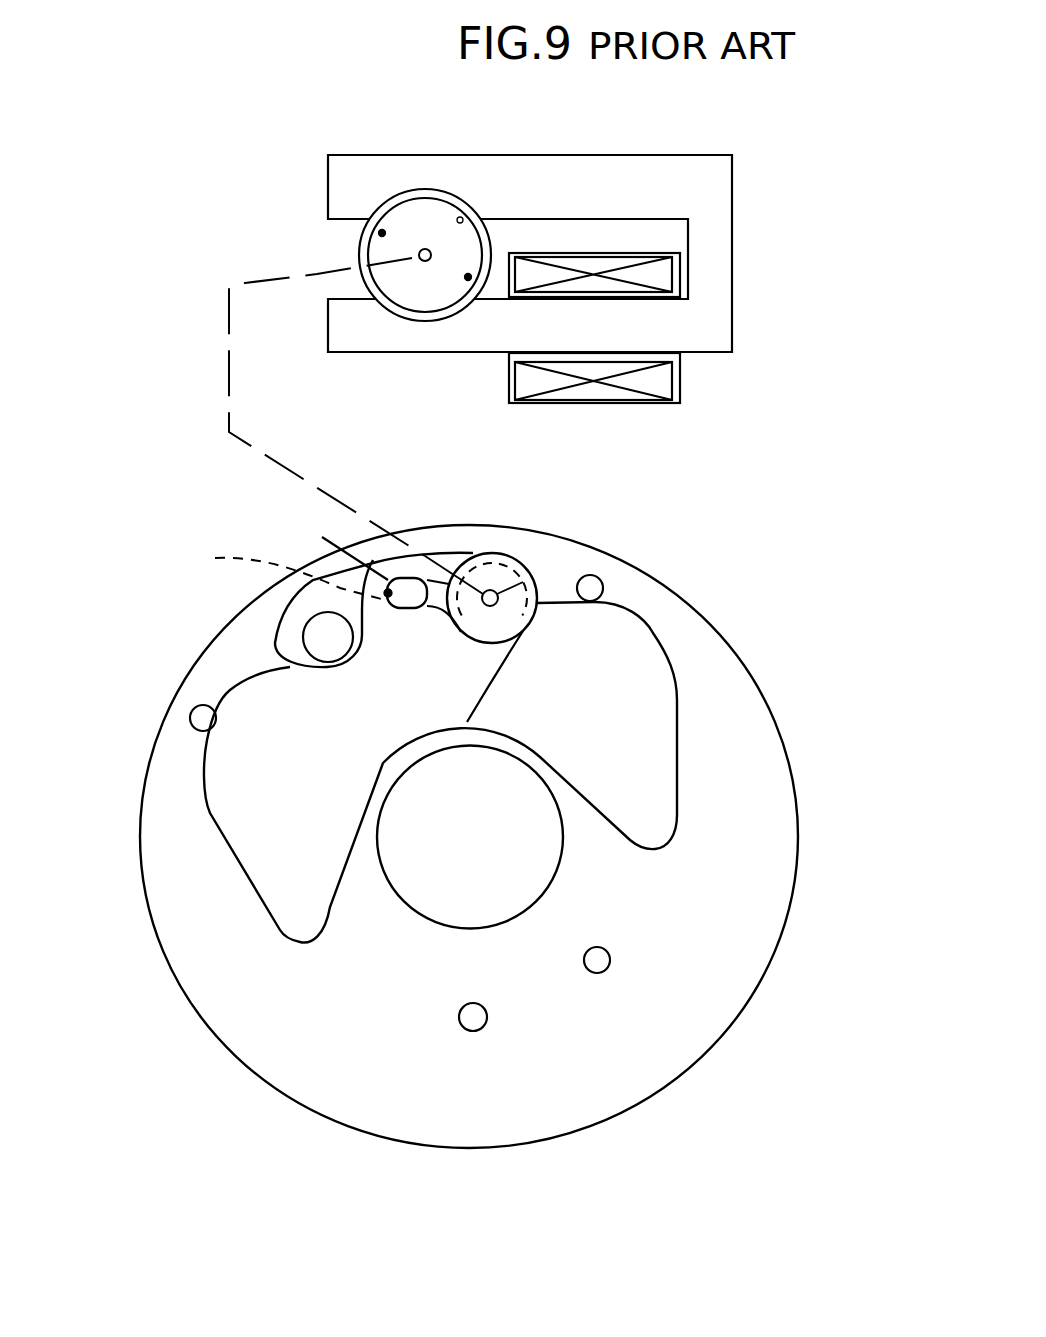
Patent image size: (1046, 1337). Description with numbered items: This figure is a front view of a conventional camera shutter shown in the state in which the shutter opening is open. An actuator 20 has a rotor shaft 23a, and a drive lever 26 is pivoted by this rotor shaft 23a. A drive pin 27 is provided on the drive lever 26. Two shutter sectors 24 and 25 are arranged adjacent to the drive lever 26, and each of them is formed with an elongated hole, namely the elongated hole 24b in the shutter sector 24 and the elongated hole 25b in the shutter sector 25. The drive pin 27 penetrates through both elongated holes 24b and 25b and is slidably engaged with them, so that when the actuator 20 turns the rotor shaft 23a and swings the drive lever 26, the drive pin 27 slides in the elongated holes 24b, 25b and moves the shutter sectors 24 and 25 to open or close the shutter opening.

The actuator 20 is at (739, 237).
The rotor shaft 23a is at (419, 255).
The shutter sector 24 is at (210, 816).
The elongated hole 24b is at (431, 608).
The shutter sector 25 is at (652, 632).
The elongated hole 25b is at (278, 573).
The drive lever 26 is at (524, 581).
The drive pin 27 is at (322, 537).